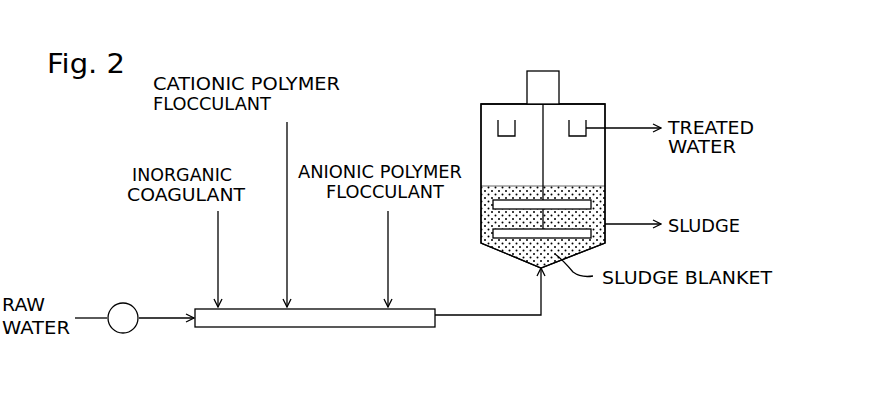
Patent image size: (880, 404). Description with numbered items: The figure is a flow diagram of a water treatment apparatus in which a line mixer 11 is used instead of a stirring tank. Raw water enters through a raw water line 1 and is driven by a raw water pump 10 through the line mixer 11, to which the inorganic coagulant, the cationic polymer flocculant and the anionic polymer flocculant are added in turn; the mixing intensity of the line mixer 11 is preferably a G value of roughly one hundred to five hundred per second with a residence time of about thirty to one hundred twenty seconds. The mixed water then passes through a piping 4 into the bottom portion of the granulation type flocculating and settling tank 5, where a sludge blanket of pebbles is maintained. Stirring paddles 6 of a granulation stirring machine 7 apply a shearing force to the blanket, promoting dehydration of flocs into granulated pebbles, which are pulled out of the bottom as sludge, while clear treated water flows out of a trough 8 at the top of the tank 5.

The raw water supply line 1 is at (88, 317).
The piping 4 is at (460, 315).
The granulation type flocculating and settling tank 5 is at (523, 146).
The stirring paddles 6 is at (507, 199).
The granulation stirring machine 7 is at (545, 70).
The trough 8 is at (580, 137).
The raw water pump 10 is at (125, 302).
The line mixer 11 is at (211, 330).